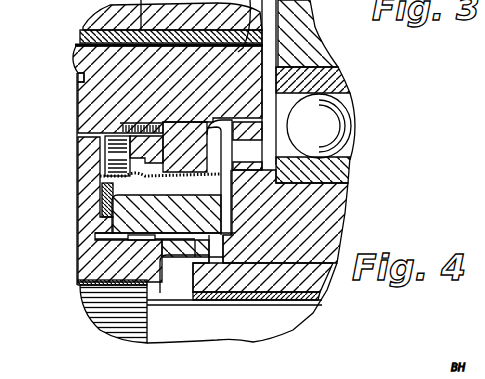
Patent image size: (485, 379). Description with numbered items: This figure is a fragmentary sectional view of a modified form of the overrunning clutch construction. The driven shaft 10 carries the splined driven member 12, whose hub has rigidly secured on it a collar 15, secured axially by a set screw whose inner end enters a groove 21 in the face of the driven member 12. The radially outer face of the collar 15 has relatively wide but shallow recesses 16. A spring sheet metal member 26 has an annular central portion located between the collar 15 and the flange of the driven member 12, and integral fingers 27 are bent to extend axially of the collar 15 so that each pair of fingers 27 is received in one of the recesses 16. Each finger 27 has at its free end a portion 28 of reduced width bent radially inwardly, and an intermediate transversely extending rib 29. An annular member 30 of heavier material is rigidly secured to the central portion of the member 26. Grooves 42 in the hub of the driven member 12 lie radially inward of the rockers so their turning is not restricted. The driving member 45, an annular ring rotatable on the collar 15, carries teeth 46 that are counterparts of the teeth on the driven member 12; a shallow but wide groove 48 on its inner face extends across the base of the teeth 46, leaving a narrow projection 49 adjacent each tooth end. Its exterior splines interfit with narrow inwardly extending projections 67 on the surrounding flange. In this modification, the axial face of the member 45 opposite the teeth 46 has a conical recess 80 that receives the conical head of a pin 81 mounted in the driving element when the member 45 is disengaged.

The driven shaft 10 is at (100, 322).
The driven member 12 is at (80, 273).
The collar 15 is at (233, 232).
The recesses 16 is at (103, 171).
The groove 21 is at (197, 300).
The spring sheet metal member 26 is at (100, 198).
The fingers 27 is at (187, 176).
The reduced-width portion 28 is at (233, 150).
The rib 29 is at (163, 187).
The annular member 30 is at (100, 214).
The grooves 42 is at (82, 262).
The driving member 45 is at (262, 62).
The teeth 46 is at (80, 110).
The groove 48 is at (100, 138).
The projection 49 is at (103, 153).
The projections 67 is at (78, 85).
The conical recess 80 is at (262, 117).
The pin 81 is at (262, 134).